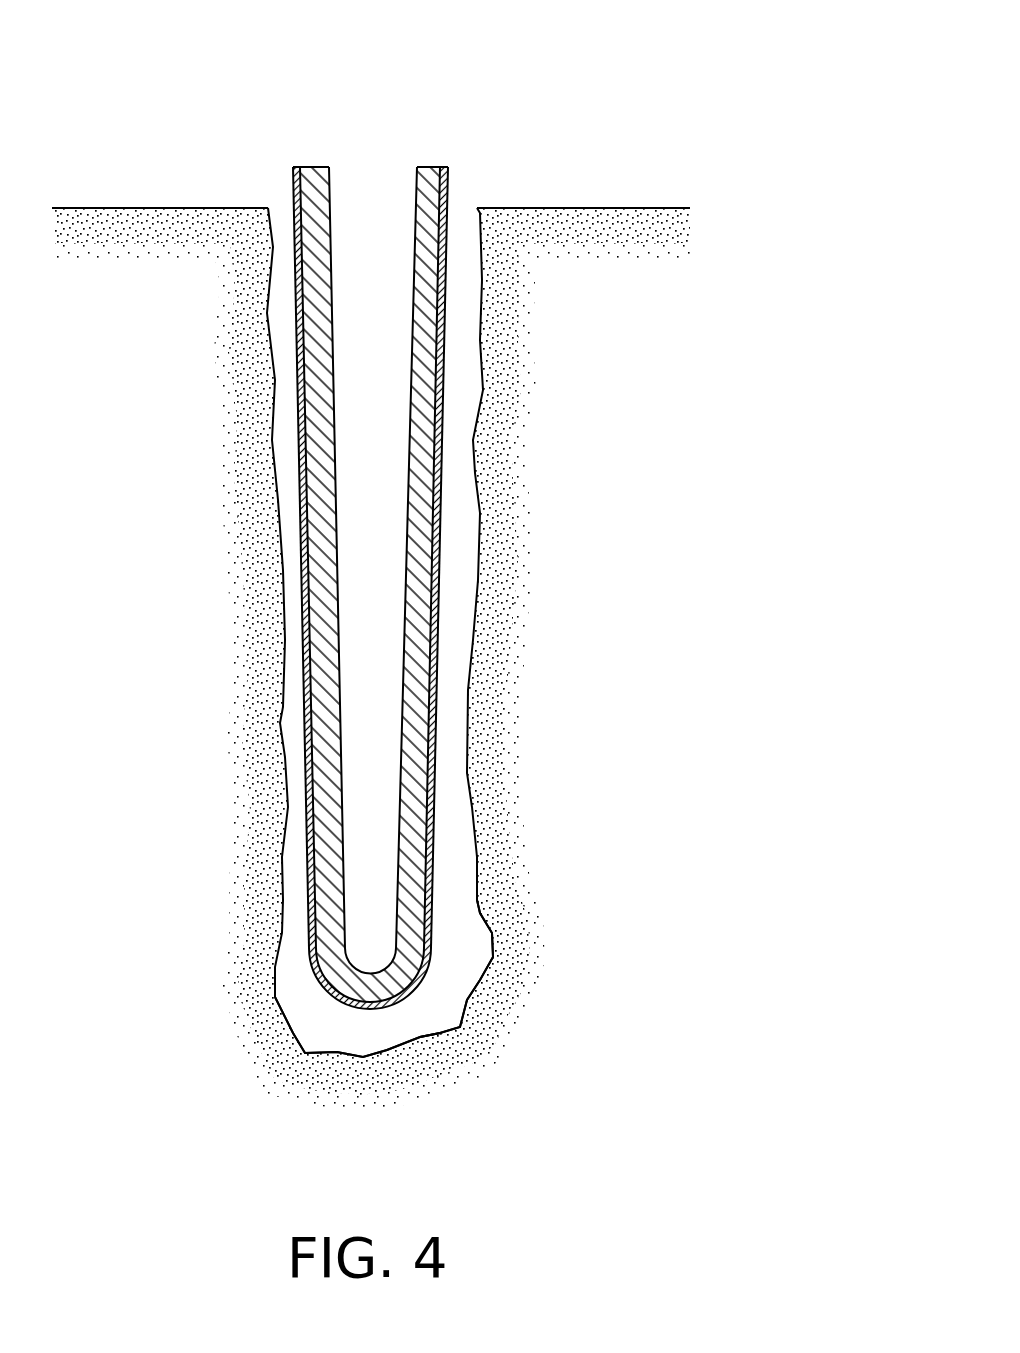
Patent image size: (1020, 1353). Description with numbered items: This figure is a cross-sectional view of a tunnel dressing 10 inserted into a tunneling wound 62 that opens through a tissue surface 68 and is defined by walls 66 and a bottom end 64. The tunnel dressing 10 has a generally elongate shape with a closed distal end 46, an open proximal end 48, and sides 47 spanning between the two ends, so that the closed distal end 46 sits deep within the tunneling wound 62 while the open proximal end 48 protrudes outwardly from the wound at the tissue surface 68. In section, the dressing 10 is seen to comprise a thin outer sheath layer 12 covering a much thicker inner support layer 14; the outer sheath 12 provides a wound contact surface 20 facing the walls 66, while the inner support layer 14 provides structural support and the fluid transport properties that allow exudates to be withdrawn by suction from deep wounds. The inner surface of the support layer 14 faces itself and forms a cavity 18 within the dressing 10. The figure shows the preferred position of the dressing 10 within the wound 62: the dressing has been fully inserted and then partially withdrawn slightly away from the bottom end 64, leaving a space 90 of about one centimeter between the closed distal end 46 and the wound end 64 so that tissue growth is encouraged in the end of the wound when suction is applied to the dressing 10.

The tunnel dressing 10 is at (435, 98).
The outer sheath layer 12 is at (445, 168).
The inner support layer 14 is at (433, 168).
The cavity 18 is at (371, 233).
The wound contact surface 20 is at (445, 388).
The closed distal end 46 is at (340, 1013).
The sides 47 is at (304, 720).
The open proximal end 48 is at (310, 158).
The tunneling wound 62 is at (282, 207).
The bottom end 64 is at (420, 1040).
The walls 66 is at (475, 477).
The tissue surface 68 is at (643, 207).
The space 90 is at (418, 1017).